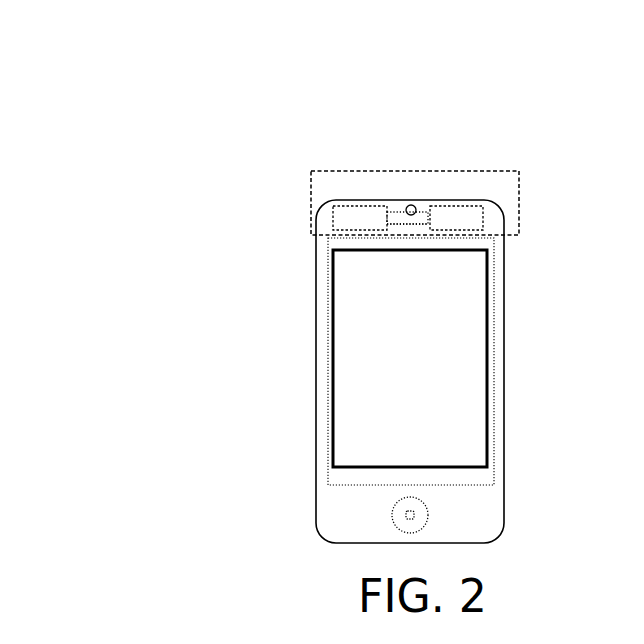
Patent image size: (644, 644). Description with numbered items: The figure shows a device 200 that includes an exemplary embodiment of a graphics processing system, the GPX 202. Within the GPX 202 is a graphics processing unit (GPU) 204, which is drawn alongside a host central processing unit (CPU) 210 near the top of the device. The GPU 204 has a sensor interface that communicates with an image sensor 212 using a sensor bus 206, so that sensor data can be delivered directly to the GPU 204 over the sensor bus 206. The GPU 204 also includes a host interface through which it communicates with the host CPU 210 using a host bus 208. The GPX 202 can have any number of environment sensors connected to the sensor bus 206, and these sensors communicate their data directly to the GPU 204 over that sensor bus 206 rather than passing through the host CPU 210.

The device 200 is at (108, 67).
The GPX 202 is at (506, 171).
The graphics processing unit (GPU) 204 is at (335, 213).
The sensor bus 206 is at (397, 213).
The host bus 208 is at (408, 224).
The host central processing unit (CPU) 210 is at (487, 217).
The image sensor 212 is at (415, 207).